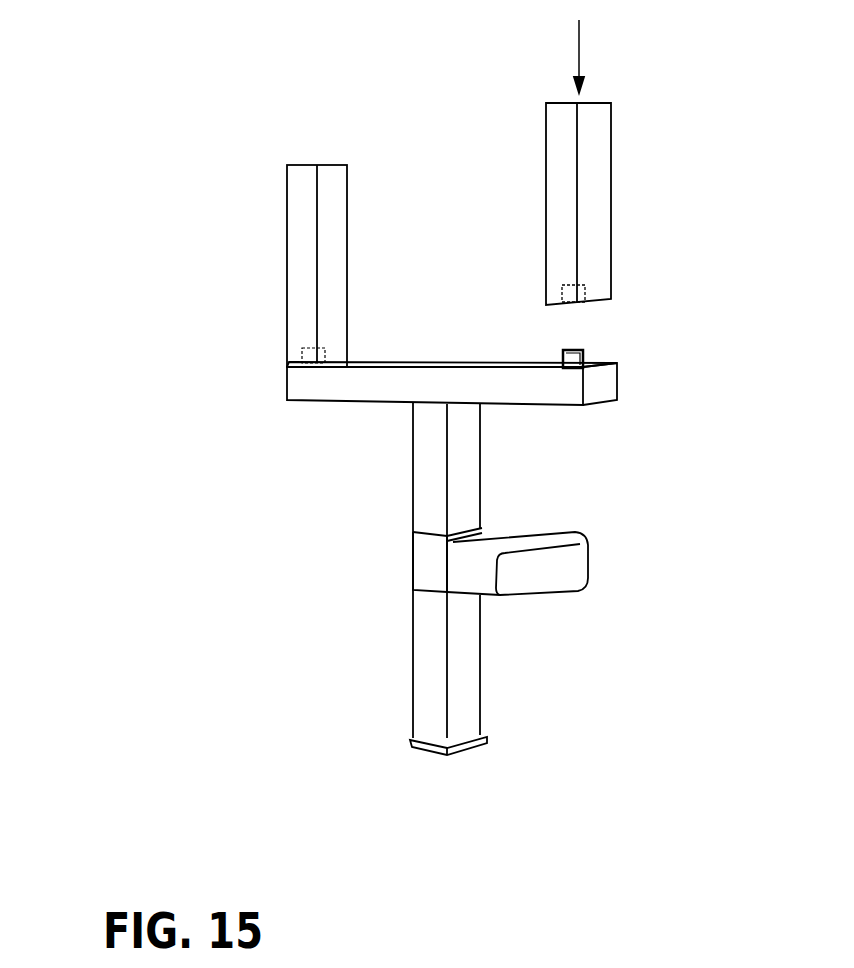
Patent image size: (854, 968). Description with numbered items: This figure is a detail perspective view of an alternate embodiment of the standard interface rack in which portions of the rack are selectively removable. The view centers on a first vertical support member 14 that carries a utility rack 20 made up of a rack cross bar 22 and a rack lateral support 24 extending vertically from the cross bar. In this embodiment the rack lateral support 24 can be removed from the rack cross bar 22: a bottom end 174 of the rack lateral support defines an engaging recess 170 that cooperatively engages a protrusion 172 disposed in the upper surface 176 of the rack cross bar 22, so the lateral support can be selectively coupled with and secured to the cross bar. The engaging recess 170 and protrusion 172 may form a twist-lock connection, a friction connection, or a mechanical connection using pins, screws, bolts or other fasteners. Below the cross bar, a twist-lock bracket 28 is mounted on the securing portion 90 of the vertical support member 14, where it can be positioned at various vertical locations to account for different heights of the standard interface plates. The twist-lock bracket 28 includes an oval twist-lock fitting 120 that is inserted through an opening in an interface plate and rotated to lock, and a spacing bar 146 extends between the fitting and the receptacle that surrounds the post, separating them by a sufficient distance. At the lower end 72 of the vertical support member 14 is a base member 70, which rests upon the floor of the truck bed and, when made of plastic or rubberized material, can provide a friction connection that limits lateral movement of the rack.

The utility rack 20 is at (198, 254).
The rack cross bar 22 is at (530, 392).
The upper surface of the rack cross bar 176 is at (387, 367).
The rack lateral support 24 is at (611, 167).
The bottom end of the rack lateral support 174 is at (587, 286).
The engaging recess 170 is at (586, 310).
The protrusion 172 is at (585, 358).
The first vertical support member 14 is at (413, 475).
The twist-lock bracket 28 is at (425, 567).
The twist-lock fitting 120 is at (555, 583).
The spacing bar 146 is at (508, 550).
The securing portion 90 is at (413, 603).
The lower end 72 is at (433, 722).
The base member 70 is at (465, 745).